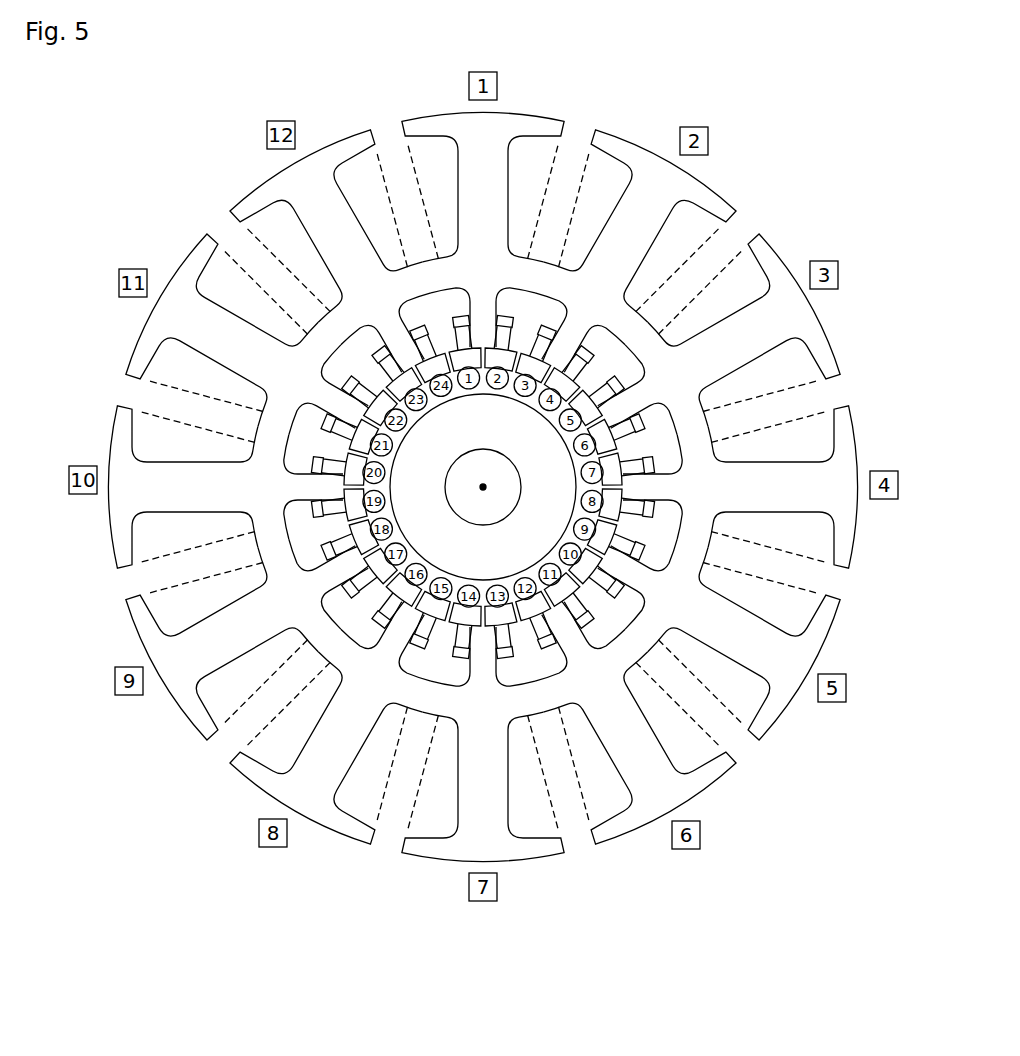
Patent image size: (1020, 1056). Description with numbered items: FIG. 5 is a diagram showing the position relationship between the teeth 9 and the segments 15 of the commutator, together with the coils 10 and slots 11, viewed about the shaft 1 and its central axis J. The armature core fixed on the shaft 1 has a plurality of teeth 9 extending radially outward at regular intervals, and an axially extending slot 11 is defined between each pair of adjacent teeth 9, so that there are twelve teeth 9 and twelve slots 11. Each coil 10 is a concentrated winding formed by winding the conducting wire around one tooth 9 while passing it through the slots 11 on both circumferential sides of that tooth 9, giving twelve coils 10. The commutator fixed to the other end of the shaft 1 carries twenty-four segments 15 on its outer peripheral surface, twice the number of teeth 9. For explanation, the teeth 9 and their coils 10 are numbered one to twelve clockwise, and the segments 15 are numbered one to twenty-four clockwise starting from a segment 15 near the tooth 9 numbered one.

The shaft 1 is at (492, 463).
The teeth 9 is at (812, 340).
The coil 10 is at (587, 818).
The slot 11 is at (723, 233).
The segment 15 is at (652, 503).
The axis J is at (483, 487).